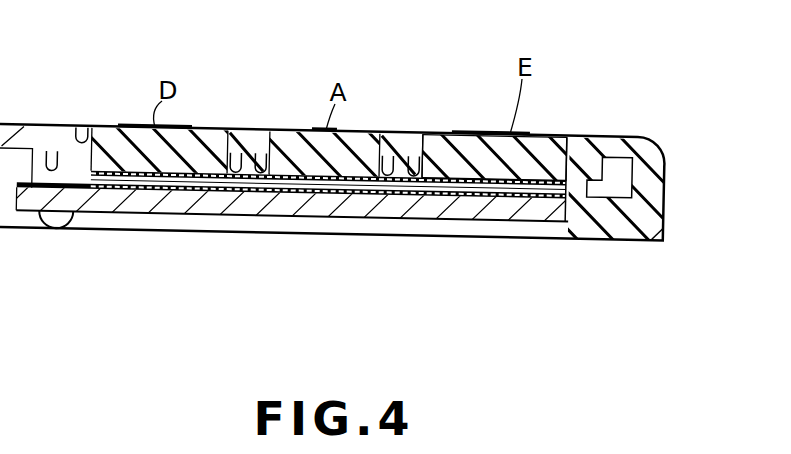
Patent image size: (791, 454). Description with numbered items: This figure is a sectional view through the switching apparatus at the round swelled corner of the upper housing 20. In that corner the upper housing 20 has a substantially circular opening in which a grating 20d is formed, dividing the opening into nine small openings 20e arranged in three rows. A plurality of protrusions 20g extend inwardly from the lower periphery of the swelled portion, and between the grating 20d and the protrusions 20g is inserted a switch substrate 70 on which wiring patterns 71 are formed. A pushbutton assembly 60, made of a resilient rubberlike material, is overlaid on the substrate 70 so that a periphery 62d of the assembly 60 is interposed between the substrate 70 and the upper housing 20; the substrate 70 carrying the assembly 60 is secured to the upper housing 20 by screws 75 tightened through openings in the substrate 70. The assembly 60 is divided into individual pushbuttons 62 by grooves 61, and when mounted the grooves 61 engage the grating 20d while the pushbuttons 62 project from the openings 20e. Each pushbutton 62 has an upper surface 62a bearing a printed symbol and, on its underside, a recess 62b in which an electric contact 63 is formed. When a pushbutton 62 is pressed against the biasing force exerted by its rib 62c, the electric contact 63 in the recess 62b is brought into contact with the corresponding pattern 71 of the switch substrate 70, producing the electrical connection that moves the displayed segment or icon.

The upper housing 20 is at (26, 116).
The grating 20d is at (257, 129).
The small openings 20e is at (78, 125).
The protrusions 20g is at (606, 242).
The pushbutton assembly 60 is at (452, 121).
The grooves 61 is at (268, 129).
The pushbutton 62 is at (193, 150).
The upper surface 62a is at (122, 126).
The recess 62b is at (188, 189).
The rib 62c is at (91, 174).
The periphery 62d is at (667, 183).
The electric contact 63 is at (150, 201).
The switch substrate 70 is at (301, 215).
The wiring pattern 71 is at (114, 181).
The screw 75 is at (41, 230).